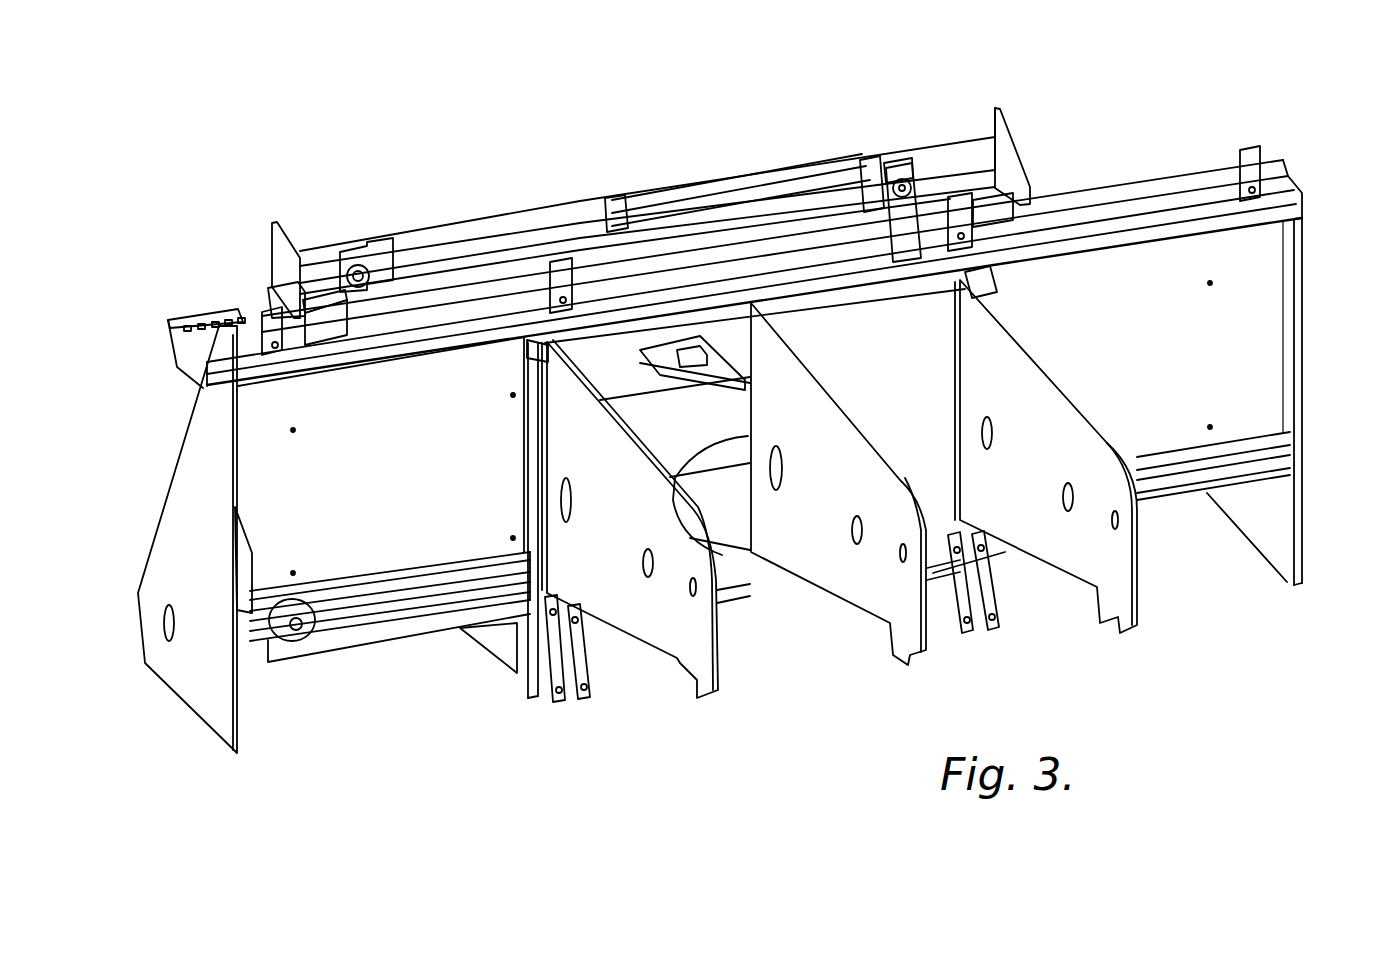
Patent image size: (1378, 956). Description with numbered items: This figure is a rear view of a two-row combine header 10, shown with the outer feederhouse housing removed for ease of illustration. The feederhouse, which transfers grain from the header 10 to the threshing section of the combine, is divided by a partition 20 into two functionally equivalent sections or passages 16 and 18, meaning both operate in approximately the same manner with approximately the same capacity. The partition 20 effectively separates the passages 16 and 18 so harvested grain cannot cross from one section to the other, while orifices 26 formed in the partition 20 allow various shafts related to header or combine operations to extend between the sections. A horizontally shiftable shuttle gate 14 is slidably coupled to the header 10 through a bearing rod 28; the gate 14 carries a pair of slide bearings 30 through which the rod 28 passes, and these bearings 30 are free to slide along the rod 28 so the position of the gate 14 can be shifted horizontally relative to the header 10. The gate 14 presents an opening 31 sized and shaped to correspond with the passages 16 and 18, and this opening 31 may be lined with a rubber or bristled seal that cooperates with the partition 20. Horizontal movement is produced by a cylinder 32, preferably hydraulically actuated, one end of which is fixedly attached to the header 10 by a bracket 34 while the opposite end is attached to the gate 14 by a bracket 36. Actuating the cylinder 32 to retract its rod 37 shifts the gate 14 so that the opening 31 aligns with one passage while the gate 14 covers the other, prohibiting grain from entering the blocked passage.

The two-row combine header 10 is at (1268, 103).
The shuttle gate 14 is at (322, 255).
The feederhouse section 16 is at (1052, 658).
The feederhouse section 18 is at (786, 682).
The partition 20 is at (903, 613).
The orifices 26 is at (780, 490).
The bearing rod 28 is at (1153, 183).
The slide bearings 30 is at (317, 322).
The gate opening 31 is at (712, 411).
The cylinder 32 is at (760, 192).
The bracket 34 is at (910, 224).
The bracket 36 is at (363, 250).
The rod 37 is at (540, 235).